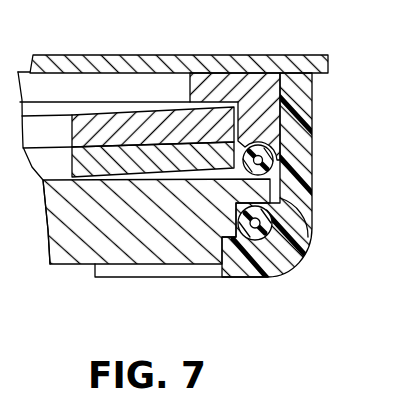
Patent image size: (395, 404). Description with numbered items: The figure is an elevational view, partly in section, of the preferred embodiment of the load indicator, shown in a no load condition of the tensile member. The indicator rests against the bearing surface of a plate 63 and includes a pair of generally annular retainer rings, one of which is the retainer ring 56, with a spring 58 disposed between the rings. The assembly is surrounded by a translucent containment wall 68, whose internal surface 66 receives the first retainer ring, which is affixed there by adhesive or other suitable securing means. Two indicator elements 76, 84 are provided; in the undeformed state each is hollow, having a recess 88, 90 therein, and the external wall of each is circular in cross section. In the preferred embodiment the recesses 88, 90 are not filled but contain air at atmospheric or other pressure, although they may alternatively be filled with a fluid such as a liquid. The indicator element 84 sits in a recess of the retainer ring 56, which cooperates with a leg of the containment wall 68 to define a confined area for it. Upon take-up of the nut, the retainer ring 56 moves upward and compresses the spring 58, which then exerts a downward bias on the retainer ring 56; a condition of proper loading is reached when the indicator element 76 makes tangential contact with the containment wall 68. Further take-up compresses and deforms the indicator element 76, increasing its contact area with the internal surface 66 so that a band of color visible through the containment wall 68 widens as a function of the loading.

The retainer ring 56 is at (102, 247).
The spring 58 is at (114, 124).
The plate 63 is at (182, 69).
The internal surface of containment wall 66 is at (291, 214).
The containment wall 68 is at (298, 203).
The indicator element 76 is at (293, 174).
The indicator element 84 is at (270, 262).
The recess 88 is at (273, 147).
The recess 90 is at (247, 250).